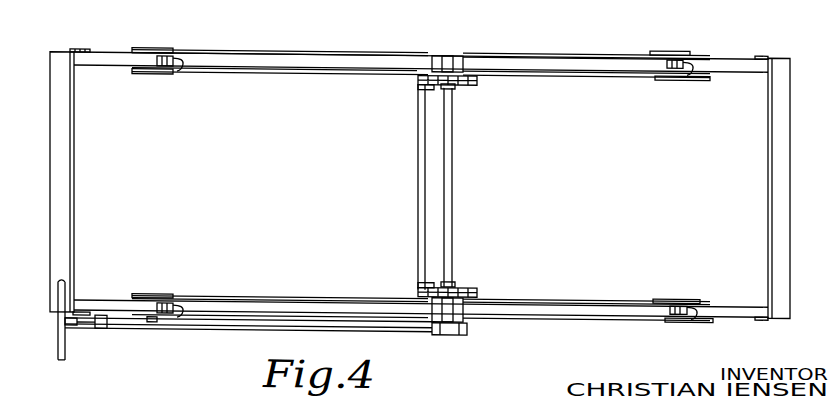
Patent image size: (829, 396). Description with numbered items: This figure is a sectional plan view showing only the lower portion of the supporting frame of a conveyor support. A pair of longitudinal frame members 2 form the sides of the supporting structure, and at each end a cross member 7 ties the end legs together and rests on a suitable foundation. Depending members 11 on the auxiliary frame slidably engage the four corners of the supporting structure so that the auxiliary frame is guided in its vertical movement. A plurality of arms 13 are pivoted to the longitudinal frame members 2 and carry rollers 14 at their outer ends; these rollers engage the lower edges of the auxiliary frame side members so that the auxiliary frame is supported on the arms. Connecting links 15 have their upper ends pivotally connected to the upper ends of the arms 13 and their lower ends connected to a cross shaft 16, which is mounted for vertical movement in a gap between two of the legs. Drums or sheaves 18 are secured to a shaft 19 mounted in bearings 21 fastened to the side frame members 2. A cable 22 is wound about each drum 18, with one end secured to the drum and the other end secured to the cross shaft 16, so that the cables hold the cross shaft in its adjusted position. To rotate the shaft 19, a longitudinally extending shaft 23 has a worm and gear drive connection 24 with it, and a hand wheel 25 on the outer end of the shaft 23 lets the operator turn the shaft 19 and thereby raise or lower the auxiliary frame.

The longitudinal frame member 2 is at (101, 65).
The cross member 7 is at (75, 202).
The depending member 11 is at (89, 49).
The arm 13 is at (148, 48).
The roller 14 is at (181, 67).
The connecting link 15 is at (275, 72).
The cross shaft 16 is at (418, 204).
The drum or sheave 18 is at (475, 79).
The shaft 19 is at (453, 180).
The bearing 21 is at (449, 53).
The cable 22 is at (432, 86).
The longitudinally extending shaft 23 is at (228, 328).
The worm and gear drive connection 24 is at (445, 333).
The hand wheel 25 is at (50, 357).